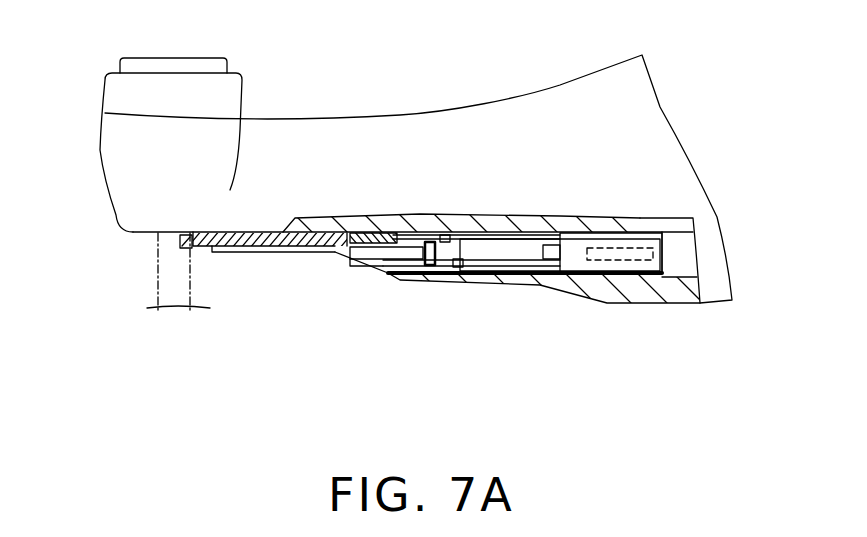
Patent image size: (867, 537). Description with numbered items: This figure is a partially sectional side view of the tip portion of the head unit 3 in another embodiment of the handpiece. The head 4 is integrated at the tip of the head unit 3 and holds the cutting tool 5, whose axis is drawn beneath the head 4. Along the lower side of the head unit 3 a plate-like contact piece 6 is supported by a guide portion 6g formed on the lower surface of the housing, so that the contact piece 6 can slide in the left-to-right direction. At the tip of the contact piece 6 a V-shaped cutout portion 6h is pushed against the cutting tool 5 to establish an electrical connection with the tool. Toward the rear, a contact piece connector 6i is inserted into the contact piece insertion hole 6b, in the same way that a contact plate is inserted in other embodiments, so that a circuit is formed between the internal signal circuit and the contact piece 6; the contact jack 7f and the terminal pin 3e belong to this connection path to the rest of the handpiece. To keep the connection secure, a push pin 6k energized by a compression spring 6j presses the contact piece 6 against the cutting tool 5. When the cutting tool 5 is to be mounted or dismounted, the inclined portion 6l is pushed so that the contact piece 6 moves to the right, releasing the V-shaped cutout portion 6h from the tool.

The head unit 3 is at (637, 133).
The terminal pin 3e is at (687, 247).
The head 4 is at (122, 140).
The cutting tool 5 is at (165, 284).
The contact piece 6 is at (283, 252).
The contact piece insertion hole 6b is at (390, 274).
The guide portion 6g is at (255, 253).
The V-shaped cutout portion 6h is at (157, 237).
The contact piece connector 6i is at (428, 258).
The compression spring 6j is at (460, 236).
The push pin 6k is at (367, 250).
The inclined portion 6l is at (360, 264).
The contact jack 7f is at (577, 258).